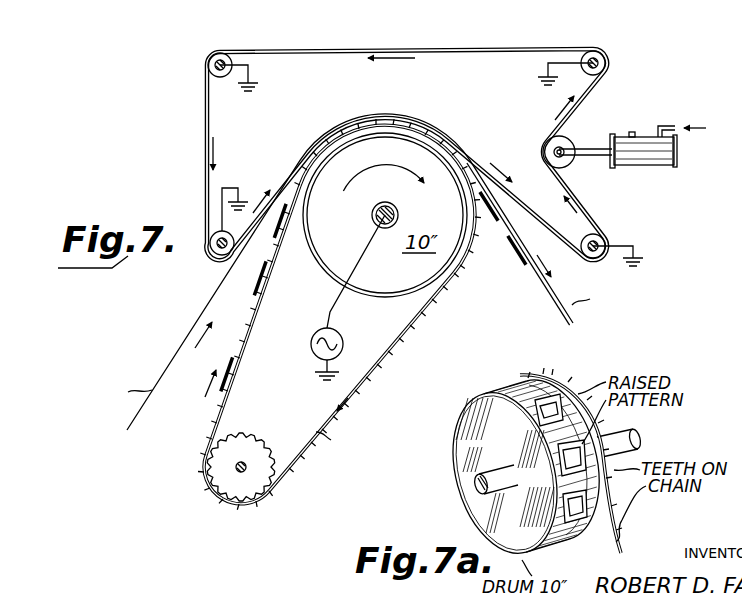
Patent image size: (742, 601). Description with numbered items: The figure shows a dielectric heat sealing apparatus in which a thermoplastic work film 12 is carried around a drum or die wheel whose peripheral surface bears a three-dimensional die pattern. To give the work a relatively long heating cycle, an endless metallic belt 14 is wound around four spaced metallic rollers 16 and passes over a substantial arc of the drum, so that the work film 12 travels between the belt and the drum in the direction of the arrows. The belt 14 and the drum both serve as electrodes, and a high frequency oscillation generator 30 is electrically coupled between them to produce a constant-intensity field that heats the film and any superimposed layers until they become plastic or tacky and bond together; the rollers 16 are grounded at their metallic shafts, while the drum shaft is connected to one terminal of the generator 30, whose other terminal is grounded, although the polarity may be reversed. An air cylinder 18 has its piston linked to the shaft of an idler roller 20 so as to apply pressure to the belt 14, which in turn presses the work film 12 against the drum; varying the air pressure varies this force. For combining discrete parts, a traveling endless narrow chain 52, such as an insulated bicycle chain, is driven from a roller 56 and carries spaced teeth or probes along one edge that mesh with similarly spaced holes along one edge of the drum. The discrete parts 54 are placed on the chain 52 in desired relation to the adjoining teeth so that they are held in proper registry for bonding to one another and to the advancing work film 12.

The work film 12 is at (150, 402).
The endless metallic belt 14 is at (487, 48).
The metallic rollers 16 is at (213, 64).
The air cylinder 18 is at (648, 136).
The idler roller 20 is at (567, 142).
The high frequency oscillation generator 30 is at (311, 350).
The endless narrow chain 52 is at (385, 356).
The discrete parts 54 is at (244, 306).
The roller 56 is at (230, 482).